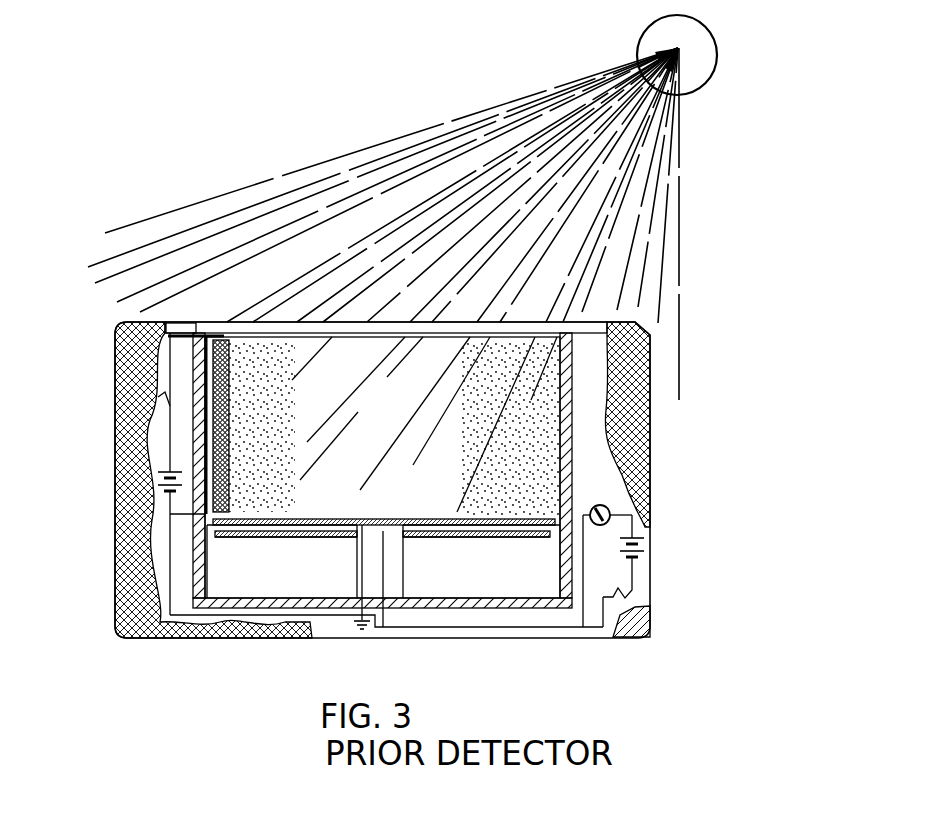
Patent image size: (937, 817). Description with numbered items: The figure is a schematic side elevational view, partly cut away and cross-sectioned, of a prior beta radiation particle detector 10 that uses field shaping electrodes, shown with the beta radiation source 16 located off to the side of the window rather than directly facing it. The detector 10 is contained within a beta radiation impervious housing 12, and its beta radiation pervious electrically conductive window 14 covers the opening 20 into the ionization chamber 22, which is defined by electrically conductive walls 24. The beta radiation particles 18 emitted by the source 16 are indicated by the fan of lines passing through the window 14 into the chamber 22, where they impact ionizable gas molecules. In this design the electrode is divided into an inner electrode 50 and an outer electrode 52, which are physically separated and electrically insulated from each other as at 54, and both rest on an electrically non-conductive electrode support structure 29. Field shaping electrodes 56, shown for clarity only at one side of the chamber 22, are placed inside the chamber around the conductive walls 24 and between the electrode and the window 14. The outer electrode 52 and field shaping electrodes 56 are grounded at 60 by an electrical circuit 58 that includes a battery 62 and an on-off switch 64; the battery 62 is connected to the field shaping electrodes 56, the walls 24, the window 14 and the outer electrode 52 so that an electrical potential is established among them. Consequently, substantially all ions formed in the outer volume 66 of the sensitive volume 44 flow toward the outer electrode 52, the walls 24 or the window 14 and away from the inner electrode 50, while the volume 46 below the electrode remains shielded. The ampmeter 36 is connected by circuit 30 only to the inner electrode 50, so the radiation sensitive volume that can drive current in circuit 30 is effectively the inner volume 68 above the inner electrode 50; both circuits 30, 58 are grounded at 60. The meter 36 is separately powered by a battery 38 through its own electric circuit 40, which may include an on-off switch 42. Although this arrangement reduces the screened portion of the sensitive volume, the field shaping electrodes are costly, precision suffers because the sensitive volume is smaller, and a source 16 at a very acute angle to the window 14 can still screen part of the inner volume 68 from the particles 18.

The beta radiation particle detector 10 is at (99, 413).
The housing 12 is at (113, 538).
The electrically conductive window 14 is at (327, 322).
The source 16 is at (648, 38).
The beta radiation particles 18 is at (386, 140).
The opening 20 is at (381, 346).
The ionization chamber 22 is at (463, 407).
The electrically conductive walls 24 is at (208, 548).
The electrode support structure 29 is at (405, 592).
The electrical circuit 30 is at (563, 632).
The meter 36 is at (612, 517).
The battery 38 is at (645, 552).
The electric circuit 40 is at (640, 578).
The on-off switch 42 is at (637, 593).
The sensitive volume 44 is at (366, 408).
The shielded volume 46 is at (263, 592).
The inner electrode 50 is at (392, 519).
The outer electrode 52 is at (503, 528).
The insulation 54 is at (302, 519).
The field shaping electrodes 56 is at (228, 352).
The electrical circuit 58 is at (164, 330).
The ground 60 is at (363, 636).
The battery 62 is at (158, 479).
The on-off switch 64 is at (158, 397).
The outer volume 66 is at (259, 412).
The inner volume 68 is at (358, 442).